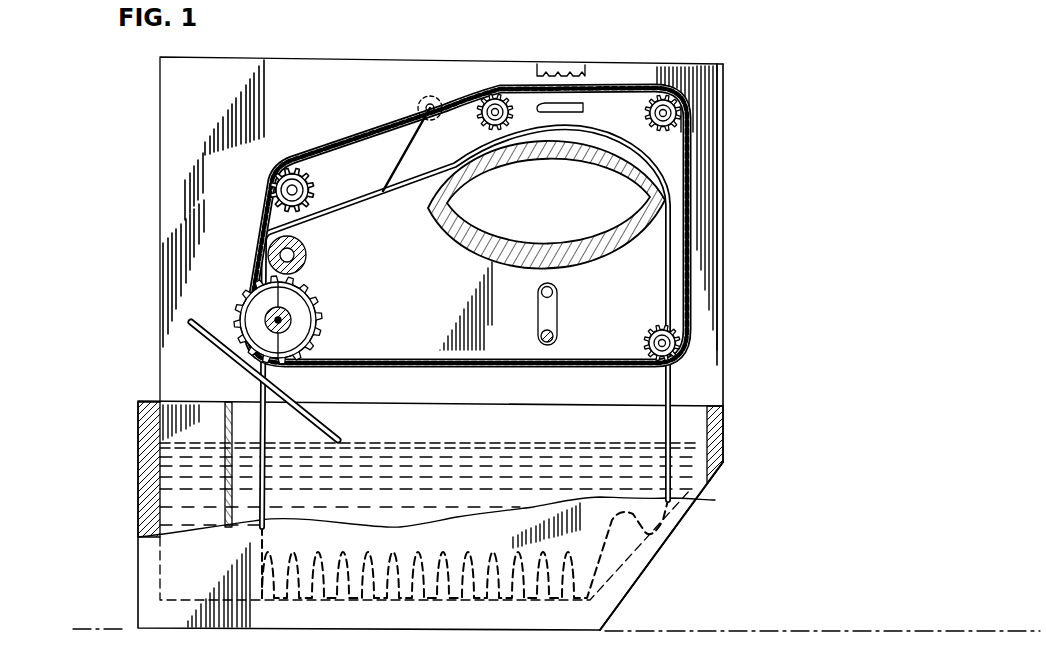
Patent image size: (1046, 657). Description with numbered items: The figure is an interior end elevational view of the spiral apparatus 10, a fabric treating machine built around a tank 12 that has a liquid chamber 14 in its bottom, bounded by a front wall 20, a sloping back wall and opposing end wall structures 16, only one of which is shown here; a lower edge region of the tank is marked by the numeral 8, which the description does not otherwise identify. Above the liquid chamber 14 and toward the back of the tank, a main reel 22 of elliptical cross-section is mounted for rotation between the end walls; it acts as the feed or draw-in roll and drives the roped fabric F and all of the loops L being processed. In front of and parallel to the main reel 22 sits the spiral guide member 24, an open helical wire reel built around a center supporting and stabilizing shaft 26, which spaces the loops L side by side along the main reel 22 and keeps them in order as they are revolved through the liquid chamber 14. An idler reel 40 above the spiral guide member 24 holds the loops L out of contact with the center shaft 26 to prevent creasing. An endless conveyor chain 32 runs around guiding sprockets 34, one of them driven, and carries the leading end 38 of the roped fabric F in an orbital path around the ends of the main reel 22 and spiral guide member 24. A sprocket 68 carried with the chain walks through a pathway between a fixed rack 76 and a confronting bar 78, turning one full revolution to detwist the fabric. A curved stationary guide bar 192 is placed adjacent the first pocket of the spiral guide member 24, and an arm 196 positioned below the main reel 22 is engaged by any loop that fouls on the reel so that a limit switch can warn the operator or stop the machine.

The tank bottom edge 8 is at (700, 500).
The spiral apparatus 10 is at (727, 322).
The tank 12 is at (713, 433).
The liquid chamber 14 is at (483, 362).
The end wall structure 16 is at (189, 151).
The front wall 20 is at (140, 506).
The main reel 22 is at (483, 262).
The spiral guide member 24 is at (296, 309).
The center supporting and stabilizing shaft 26 is at (317, 332).
The endless conveyor chain 32 is at (336, 147).
The guiding sprockets 34 is at (282, 192).
The leading end 38 is at (410, 146).
The idler reel 40 is at (270, 246).
The sprocket 68 is at (424, 106).
The fixed rack 76 is at (575, 66).
The confronting bar 78 is at (583, 111).
The curved stationary guide bar 192 is at (283, 388).
The arm 196 is at (560, 332).
The roped fabric F is at (392, 175).
The loops L is at (362, 198).